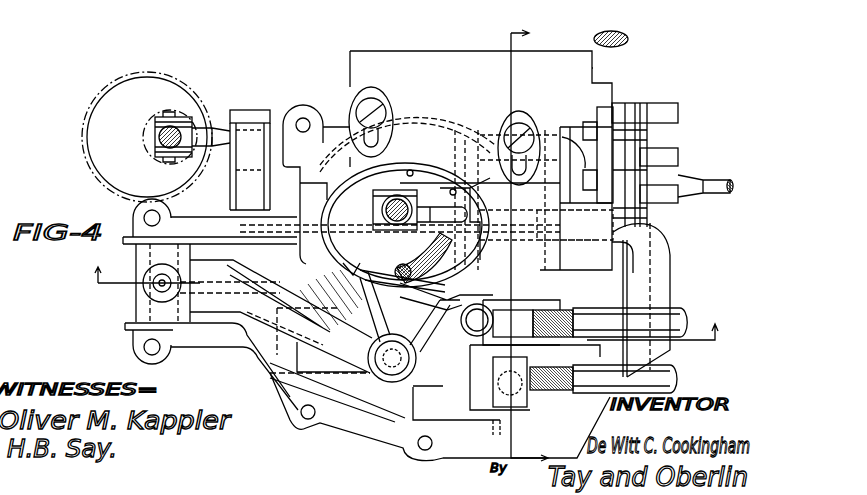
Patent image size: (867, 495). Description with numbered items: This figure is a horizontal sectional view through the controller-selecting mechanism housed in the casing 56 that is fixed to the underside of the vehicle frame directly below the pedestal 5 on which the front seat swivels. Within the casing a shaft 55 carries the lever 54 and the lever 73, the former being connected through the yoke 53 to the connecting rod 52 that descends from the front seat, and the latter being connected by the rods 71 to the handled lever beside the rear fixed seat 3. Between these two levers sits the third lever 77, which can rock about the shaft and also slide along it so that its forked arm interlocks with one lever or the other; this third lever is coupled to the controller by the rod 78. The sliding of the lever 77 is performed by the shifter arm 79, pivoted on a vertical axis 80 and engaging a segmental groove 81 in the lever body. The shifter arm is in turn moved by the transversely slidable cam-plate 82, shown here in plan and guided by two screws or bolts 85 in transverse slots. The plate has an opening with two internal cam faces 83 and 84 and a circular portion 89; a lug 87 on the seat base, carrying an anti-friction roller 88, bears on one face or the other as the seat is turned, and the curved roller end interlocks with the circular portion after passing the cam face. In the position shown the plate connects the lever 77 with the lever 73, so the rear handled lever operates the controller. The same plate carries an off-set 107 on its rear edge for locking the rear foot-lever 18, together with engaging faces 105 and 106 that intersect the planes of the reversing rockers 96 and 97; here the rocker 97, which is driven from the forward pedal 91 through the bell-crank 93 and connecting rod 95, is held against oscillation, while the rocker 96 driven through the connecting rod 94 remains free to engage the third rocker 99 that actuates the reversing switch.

The forward pedal 91 is at (181, 72).
The bell-crank 93 is at (213, 128).
The connecting rod 95 is at (277, 127).
The vertical axis 80 is at (147, 293).
The rear fixed seat 3 is at (412, 300).
The shifter arm 79 is at (277, 333).
The cam face 83 is at (367, 278).
The cam-plate 82 is at (405, 62).
The screws or bolts 85 is at (358, 105).
The circular portion 89 is at (410, 170).
The connecting rod 52 is at (390, 205).
The yoke 53 is at (381, 208).
The lever 54 is at (428, 207).
The cam face 84 is at (460, 190).
The lug 87 is at (423, 253).
The anti-friction roller 88 is at (393, 267).
The pedestal 5 is at (531, 239).
The rear foot-lever 18 is at (628, 35).
The off-set 107 is at (593, 68).
The engaging face 106 is at (615, 95).
The rocker 97 is at (676, 110).
The third rocker 99 is at (680, 158).
The connecting rod 94 is at (717, 183).
The rocker 96 is at (676, 200).
The engaging face 105 is at (655, 236).
The rod 78 is at (690, 300).
The rods 71 is at (678, 368).
The segmental groove 81 is at (483, 293).
The third lever 77 is at (480, 357).
The lever 73 is at (490, 397).
The casing 56 is at (390, 433).
The shaft 55 is at (497, 430).